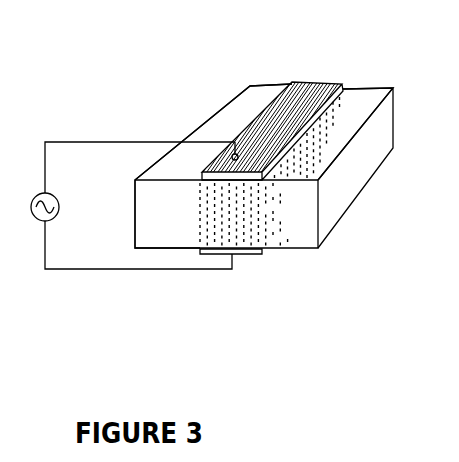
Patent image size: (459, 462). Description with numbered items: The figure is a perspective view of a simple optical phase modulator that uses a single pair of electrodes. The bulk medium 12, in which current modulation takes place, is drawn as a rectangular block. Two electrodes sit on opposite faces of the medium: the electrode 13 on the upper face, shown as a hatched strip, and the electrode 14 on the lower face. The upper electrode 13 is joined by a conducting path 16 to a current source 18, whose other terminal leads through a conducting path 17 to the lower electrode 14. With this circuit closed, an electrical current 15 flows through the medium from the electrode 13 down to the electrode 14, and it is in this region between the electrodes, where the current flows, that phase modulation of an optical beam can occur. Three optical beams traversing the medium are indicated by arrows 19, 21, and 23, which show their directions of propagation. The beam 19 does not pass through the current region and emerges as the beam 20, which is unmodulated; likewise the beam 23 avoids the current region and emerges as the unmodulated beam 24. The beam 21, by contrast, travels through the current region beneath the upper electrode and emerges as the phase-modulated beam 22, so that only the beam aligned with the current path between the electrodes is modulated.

The bulk medium 12 is at (264, 166).
The upper electrode 13 is at (259, 114).
The lower electrode 14 is at (236, 253).
The electrical current 15 is at (203, 205).
The conducting path 16 is at (140, 157).
The conducting path 17 is at (138, 256).
The current source 18 is at (33, 207).
The optical beam 19 is at (165, 213).
The unmodulated beam 20 is at (270, 80).
The optical beam 21 is at (225, 218).
The phase-modulated beam 22 is at (320, 78).
The optical beam 23 is at (290, 222).
The unmodulated beam 24 is at (368, 83).